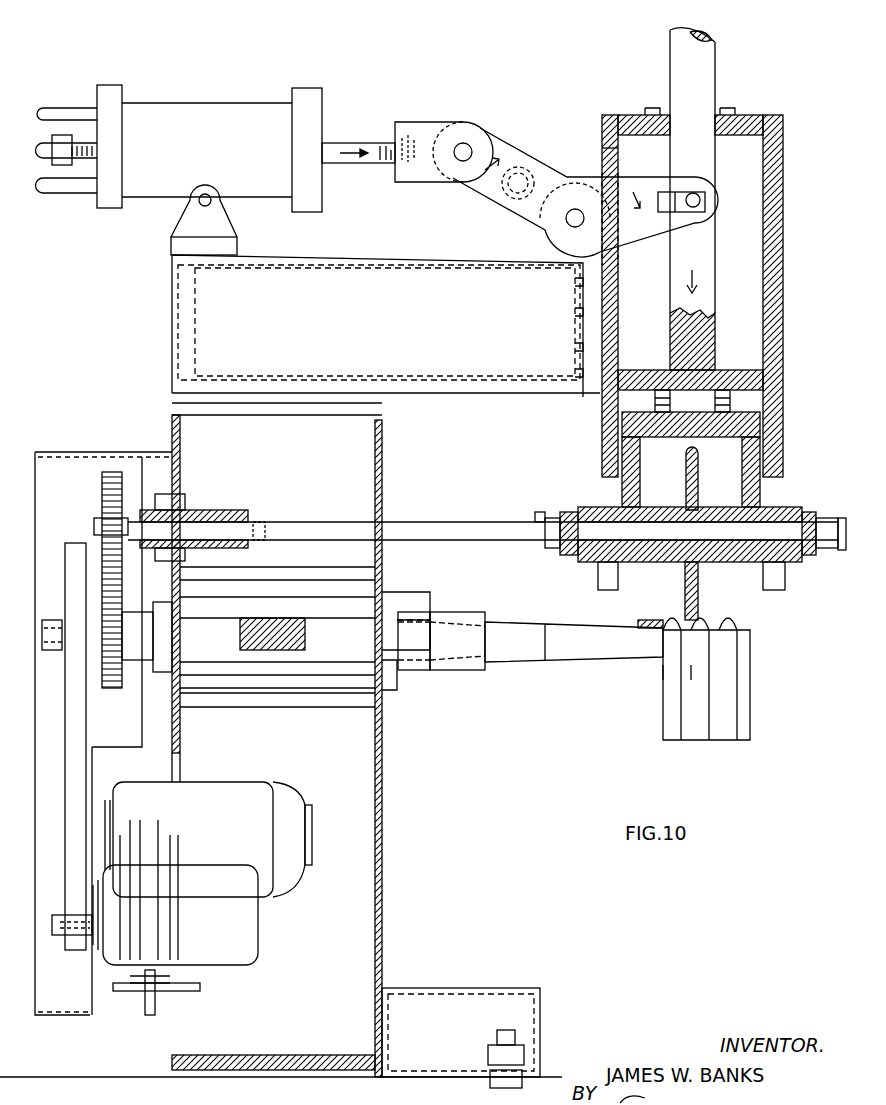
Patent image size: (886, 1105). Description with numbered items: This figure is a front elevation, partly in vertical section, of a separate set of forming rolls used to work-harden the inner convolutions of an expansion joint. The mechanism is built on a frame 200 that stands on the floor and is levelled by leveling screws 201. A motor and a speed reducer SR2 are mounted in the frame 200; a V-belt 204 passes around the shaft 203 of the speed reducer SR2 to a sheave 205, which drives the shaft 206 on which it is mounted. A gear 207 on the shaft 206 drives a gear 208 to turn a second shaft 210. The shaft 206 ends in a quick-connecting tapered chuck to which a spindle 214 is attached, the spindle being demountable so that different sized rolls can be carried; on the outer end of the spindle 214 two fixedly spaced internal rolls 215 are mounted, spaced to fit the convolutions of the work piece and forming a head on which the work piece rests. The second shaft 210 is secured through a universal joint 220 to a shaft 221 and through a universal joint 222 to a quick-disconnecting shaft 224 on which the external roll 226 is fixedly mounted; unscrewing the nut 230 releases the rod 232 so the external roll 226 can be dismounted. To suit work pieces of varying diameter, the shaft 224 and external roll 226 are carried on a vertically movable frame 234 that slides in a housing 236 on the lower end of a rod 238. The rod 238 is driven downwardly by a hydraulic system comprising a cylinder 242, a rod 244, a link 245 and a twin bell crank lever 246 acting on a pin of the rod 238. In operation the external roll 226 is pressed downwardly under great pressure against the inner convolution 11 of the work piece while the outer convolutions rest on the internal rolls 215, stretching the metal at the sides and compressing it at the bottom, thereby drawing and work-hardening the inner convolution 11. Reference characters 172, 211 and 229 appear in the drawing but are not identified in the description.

The inner convolution 11 is at (660, 625).
The motor 172 is at (285, 808).
The frame 200 is at (380, 955).
The leveling screws 201 is at (515, 1047).
The shaft 203 is at (48, 935).
The V-belt 204 is at (78, 770).
The sheave 205 is at (63, 565).
The shaft 206 is at (50, 650).
The gear 207 is at (122, 678).
The gear 208 is at (108, 472).
The second shaft 210 is at (94, 525).
The shaft 211 is at (451, 620).
The spindle 214 is at (562, 636).
The internal rolls 215 is at (706, 672).
The universal joint 220 is at (258, 520).
The shaft 221 is at (472, 522).
The universal joint 222 is at (552, 520).
The quick-disconnecting shaft 224 is at (620, 522).
The external roll 226 is at (697, 492).
The bearing hub 229 is at (660, 515).
The nut 230 is at (800, 505).
The rod 232 is at (845, 518).
The vertically movable frame 234 is at (683, 438).
The housing 236 is at (598, 345).
The rod 238 is at (712, 262).
The cylinder 242 is at (190, 110).
The rod 244 is at (348, 143).
The link 245 is at (427, 130).
The twin bell crank lever 246 is at (523, 165).
The speed reducer SR2 is at (258, 932).